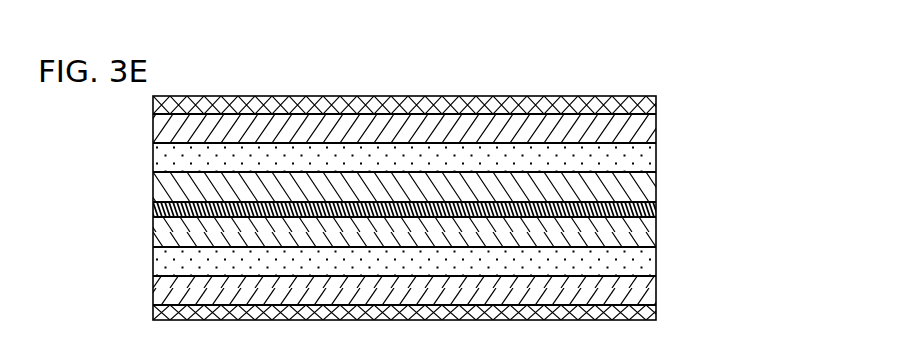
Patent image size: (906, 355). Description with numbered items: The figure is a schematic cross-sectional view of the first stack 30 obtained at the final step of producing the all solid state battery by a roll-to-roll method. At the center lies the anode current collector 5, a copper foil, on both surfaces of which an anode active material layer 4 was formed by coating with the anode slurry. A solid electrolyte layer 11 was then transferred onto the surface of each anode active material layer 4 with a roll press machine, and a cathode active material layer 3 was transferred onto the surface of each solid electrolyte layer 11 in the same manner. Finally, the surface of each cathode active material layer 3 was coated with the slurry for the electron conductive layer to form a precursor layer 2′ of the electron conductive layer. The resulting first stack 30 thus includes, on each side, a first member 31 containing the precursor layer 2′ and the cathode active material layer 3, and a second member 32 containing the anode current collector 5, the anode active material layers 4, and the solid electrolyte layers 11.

The first stack 30 is at (583, 66).
The first member 31 is at (735, 95).
The second member 32 is at (735, 145).
The precursor layer of the electron conductive layer 2′ is at (647, 102).
The cathode active material layer 3 is at (645, 124).
The solid electrolyte layer 11 is at (645, 155).
The anode active material layer 4 is at (645, 183).
The anode current collector 5 is at (645, 207).